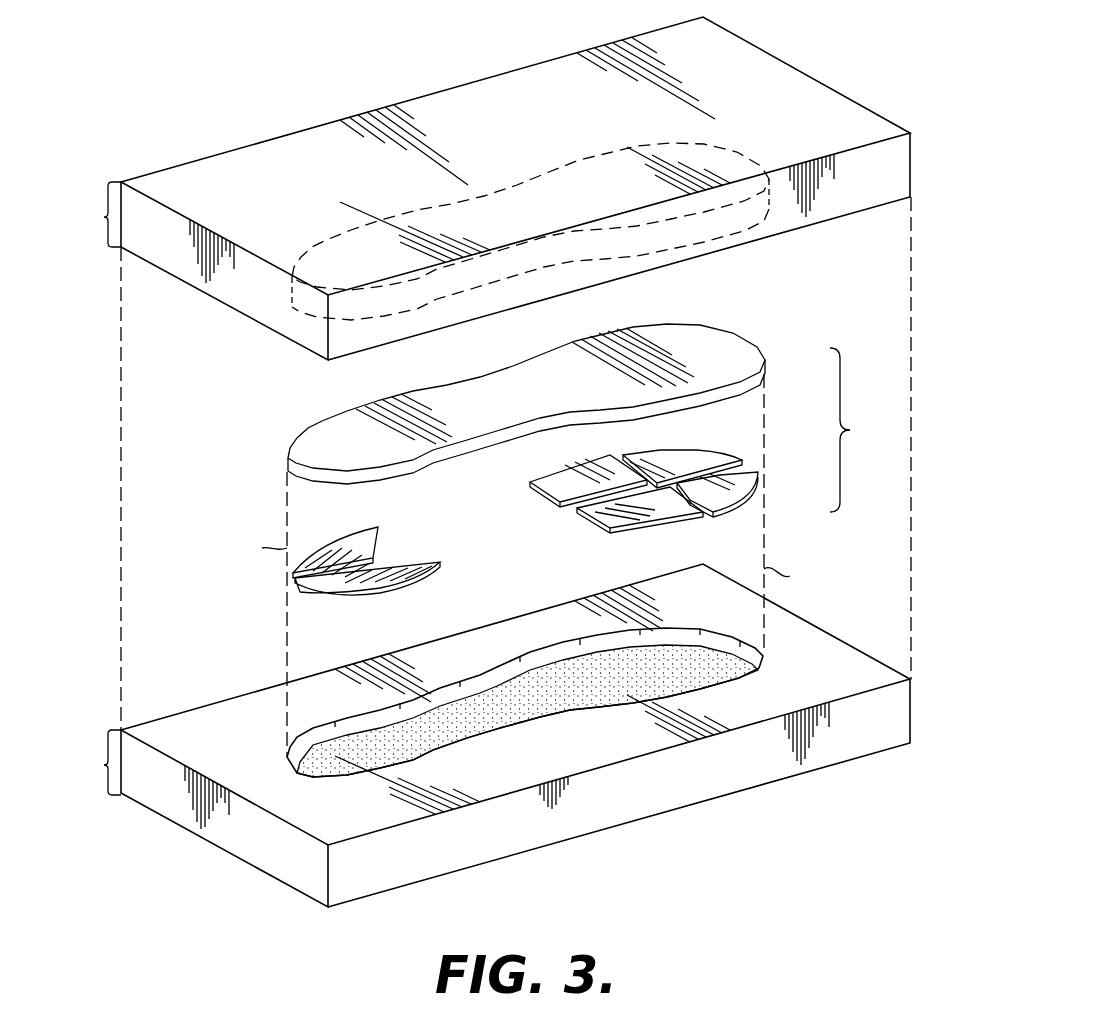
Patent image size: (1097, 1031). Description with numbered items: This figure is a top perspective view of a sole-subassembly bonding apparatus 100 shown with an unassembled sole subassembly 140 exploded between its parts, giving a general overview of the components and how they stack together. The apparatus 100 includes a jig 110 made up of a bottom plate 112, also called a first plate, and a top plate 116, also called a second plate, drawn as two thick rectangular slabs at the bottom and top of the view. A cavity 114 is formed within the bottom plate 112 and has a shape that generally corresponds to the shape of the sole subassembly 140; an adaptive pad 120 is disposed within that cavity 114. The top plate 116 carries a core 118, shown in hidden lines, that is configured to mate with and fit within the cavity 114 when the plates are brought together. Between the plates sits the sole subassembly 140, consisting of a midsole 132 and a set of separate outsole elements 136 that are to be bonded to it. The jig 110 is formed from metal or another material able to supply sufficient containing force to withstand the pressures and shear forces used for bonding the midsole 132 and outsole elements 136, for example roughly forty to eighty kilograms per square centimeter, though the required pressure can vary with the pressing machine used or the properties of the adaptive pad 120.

The sole-subassembly bonding apparatus 100 is at (352, 72).
The jig 110 is at (108, 217).
The bottom plate 112 is at (264, 858).
The cavity 114 is at (350, 722).
The top plate 116 is at (757, 68).
The core 118 is at (718, 228).
The adaptive pad 120 is at (567, 673).
The midsole 132 is at (327, 428).
The outsole elements 136 is at (760, 466).
The sole subassembly 140 is at (850, 430).